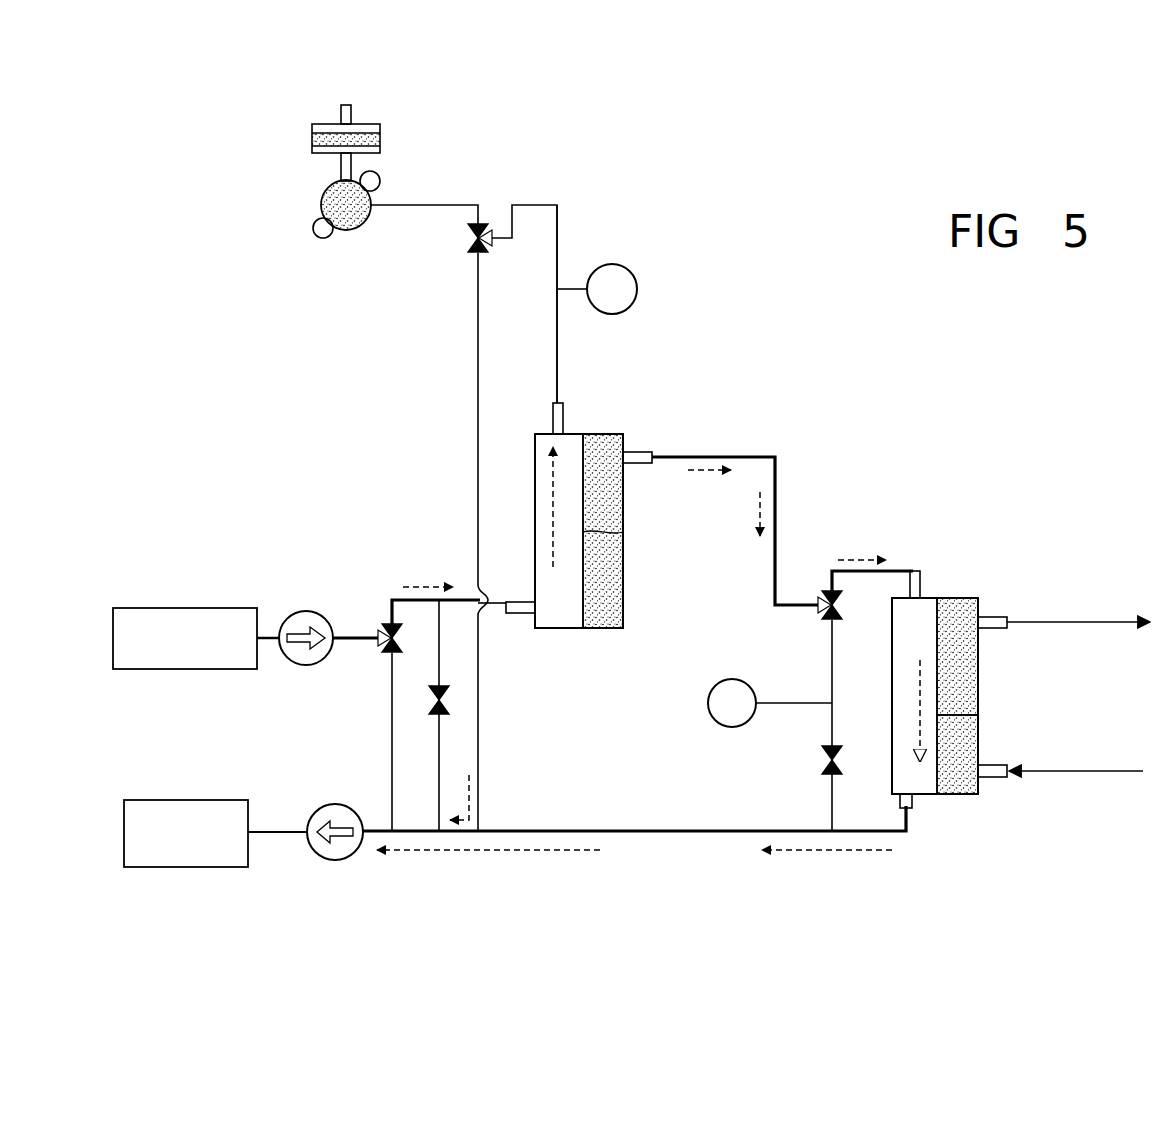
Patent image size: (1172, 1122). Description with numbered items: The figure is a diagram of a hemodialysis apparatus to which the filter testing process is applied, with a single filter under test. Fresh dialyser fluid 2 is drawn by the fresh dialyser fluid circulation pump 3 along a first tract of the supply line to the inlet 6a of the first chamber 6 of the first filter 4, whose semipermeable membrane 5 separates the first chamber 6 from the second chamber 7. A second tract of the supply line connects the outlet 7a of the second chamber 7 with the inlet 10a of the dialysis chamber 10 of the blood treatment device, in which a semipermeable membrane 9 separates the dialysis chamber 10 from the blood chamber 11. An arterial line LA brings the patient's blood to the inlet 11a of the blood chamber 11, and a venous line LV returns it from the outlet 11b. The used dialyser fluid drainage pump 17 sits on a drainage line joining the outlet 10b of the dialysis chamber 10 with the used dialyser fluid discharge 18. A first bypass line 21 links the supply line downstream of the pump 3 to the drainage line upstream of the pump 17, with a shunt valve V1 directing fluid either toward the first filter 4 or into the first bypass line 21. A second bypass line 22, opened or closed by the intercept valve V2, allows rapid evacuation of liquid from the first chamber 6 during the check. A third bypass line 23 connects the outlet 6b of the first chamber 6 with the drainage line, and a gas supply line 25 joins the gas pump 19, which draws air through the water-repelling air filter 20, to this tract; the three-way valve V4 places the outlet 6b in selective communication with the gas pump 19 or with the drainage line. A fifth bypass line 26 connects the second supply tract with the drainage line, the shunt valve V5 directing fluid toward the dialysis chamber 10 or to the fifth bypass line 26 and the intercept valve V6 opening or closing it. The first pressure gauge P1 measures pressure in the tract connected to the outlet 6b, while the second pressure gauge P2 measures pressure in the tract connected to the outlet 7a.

The fresh dialyser fluid 2 is at (155, 608).
The fresh dialyser fluid circulation pump 3 is at (300, 612).
The shunt valve V1 is at (388, 624).
The intercept valve V2 is at (432, 705).
The first bypass line 21 is at (392, 752).
The second bypass line 22 is at (440, 740).
The gas supply line 25 is at (407, 204).
The three-way valve V4 is at (480, 225).
The third bypass line 23 is at (558, 225).
The first pressure gauge P1 is at (632, 270).
The water-repelling air filter 20 is at (312, 138).
The gas pump 19 is at (322, 205).
The first filter 4 is at (596, 645).
The first chamber 6 is at (553, 590).
The semipermeable membrane 5 is at (592, 532).
The second chamber 7 is at (610, 598).
The outlet 6b is at (563, 415).
The outlet 7a is at (645, 452).
The inlet 6a is at (520, 613).
The shunt valve V5 is at (828, 590).
The fifth bypass line 26 is at (832, 637).
The second pressure gauge P2 is at (715, 710).
The intercept valve V6 is at (828, 765).
The dialysis chamber 10 is at (920, 785).
The blood chamber 11 is at (960, 673).
The semipermeable membrane 9 is at (940, 715).
The inlet 10a is at (920, 590).
The outlet 10b is at (912, 800).
The outlet 11b is at (1000, 617).
The venous line LV is at (1100, 622).
The inlet 11a is at (1000, 777).
The arterial line LA is at (1115, 771).
The used dialyser fluid discharge 18 is at (178, 800).
The used dialyser fluid drainage pump 17 is at (327, 806).